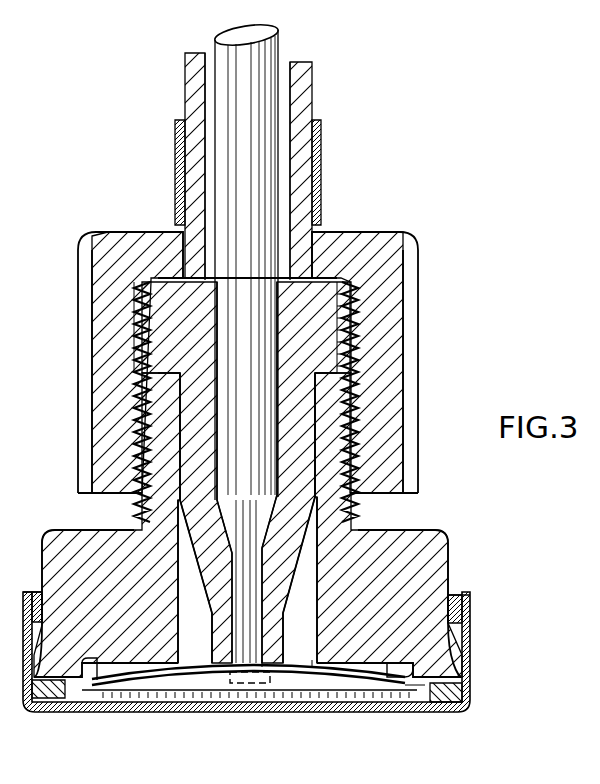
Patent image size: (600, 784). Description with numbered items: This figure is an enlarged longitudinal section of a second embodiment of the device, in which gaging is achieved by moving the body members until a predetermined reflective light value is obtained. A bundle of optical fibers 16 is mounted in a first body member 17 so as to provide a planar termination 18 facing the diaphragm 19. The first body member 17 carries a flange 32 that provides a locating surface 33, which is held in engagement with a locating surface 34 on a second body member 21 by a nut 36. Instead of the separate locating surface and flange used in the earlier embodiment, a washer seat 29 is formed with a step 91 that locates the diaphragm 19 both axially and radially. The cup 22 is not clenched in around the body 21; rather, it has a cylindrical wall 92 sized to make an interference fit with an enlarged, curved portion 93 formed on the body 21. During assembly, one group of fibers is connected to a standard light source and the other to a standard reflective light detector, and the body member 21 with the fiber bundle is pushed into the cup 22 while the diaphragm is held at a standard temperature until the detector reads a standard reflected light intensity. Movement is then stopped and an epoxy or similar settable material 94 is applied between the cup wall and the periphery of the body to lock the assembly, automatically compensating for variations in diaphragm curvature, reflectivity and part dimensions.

The bundle of optical fibers 16 is at (280, 40).
The first body member 17 is at (302, 207).
The flange 32 is at (332, 282).
The locating surface 33 is at (352, 380).
The locating surface 34 is at (147, 363).
The nut 36 is at (403, 397).
The second body member 21 is at (453, 538).
The settable material 94 is at (455, 596).
The cylindrical wall 92 is at (470, 618).
The cup 22 is at (468, 653).
The enlarged curved portion 93 is at (463, 663).
The washer seat 29 is at (455, 692).
The planar termination 18 is at (262, 667).
The diaphragm 19 is at (312, 667).
The step 91 is at (423, 690).